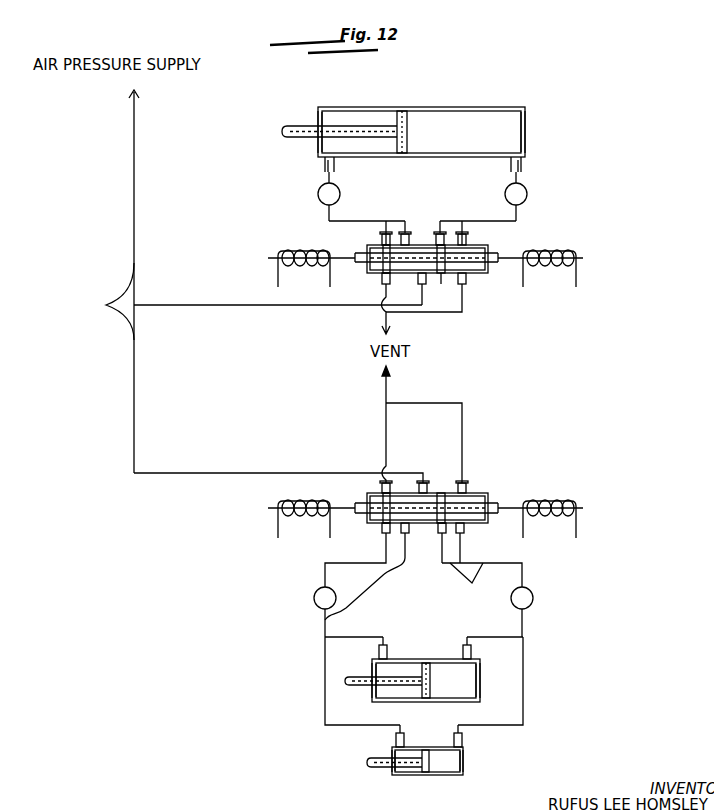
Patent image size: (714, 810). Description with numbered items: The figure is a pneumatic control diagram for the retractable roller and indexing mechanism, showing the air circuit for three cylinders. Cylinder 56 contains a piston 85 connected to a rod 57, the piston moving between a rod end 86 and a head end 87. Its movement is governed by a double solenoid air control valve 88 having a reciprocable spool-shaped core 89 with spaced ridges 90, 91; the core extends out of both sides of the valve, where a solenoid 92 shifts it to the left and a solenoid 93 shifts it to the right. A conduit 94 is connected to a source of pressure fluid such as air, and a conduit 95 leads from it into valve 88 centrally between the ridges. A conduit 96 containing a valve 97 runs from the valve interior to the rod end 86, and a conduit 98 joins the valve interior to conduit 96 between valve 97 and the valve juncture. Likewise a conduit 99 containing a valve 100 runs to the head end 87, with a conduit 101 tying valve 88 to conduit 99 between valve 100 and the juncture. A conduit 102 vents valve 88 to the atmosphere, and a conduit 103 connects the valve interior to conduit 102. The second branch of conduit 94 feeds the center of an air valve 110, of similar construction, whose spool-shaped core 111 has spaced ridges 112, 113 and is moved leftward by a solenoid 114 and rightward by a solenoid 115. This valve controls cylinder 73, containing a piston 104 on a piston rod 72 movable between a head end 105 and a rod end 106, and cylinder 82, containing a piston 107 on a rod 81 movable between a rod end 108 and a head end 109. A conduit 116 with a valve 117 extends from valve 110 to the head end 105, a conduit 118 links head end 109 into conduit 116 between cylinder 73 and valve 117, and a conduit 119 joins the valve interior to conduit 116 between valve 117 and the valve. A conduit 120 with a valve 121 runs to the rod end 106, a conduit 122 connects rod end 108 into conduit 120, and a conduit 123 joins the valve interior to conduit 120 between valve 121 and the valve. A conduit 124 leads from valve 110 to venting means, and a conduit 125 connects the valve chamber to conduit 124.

The air cylinder 56 is at (452, 107).
The rod 57 is at (297, 127).
The piston 85 is at (408, 128).
The rod end 86 is at (322, 146).
The head end 87 is at (526, 132).
The valve 97 is at (318, 194).
The valve 100 is at (527, 194).
The conduit 96 is at (405, 221).
The conduit 99 is at (503, 221).
The conduit 98 is at (380, 230).
The conduit 101 is at (466, 228).
The spool-shaped core 89 is at (497, 254).
The ridge 90 is at (378, 270).
The air control valve 88 is at (467, 273).
The ridge 91 is at (441, 278).
The solenoid 92 is at (277, 260).
The solenoid 93 is at (578, 273).
The conduit 94 is at (106, 305).
The conduit 95 is at (283, 306).
The conduit 102 is at (381, 312).
The conduit 103 is at (463, 310).
The conduit 124 is at (386, 432).
The conduit 125 is at (463, 433).
The air valve 110 is at (470, 487).
The spool-shaped core 111 is at (500, 505).
The ridge 112 is at (385, 512).
The ridge 113 is at (440, 527).
The solenoid 114 is at (277, 528).
The solenoid 115 is at (578, 525).
The conduit 123 is at (385, 548).
The conduit 119 is at (462, 550).
The valve 121 is at (314, 598).
The valve 117 is at (533, 598).
The conduit 120 is at (384, 576).
The conduit 116 is at (536, 682).
The conduit 122 is at (365, 637).
The conduit 118 is at (478, 637).
The air cylinder 82 is at (420, 659).
The rod 81 is at (361, 676).
The piston 107 is at (430, 680).
The rod end 108 is at (375, 696).
The head end 109 is at (483, 694).
The head end 105 is at (464, 762).
The piston rod 72 is at (380, 768).
The rod end 106 is at (390, 775).
The piston 104 is at (428, 774).
The air cylinder 73 is at (462, 773).